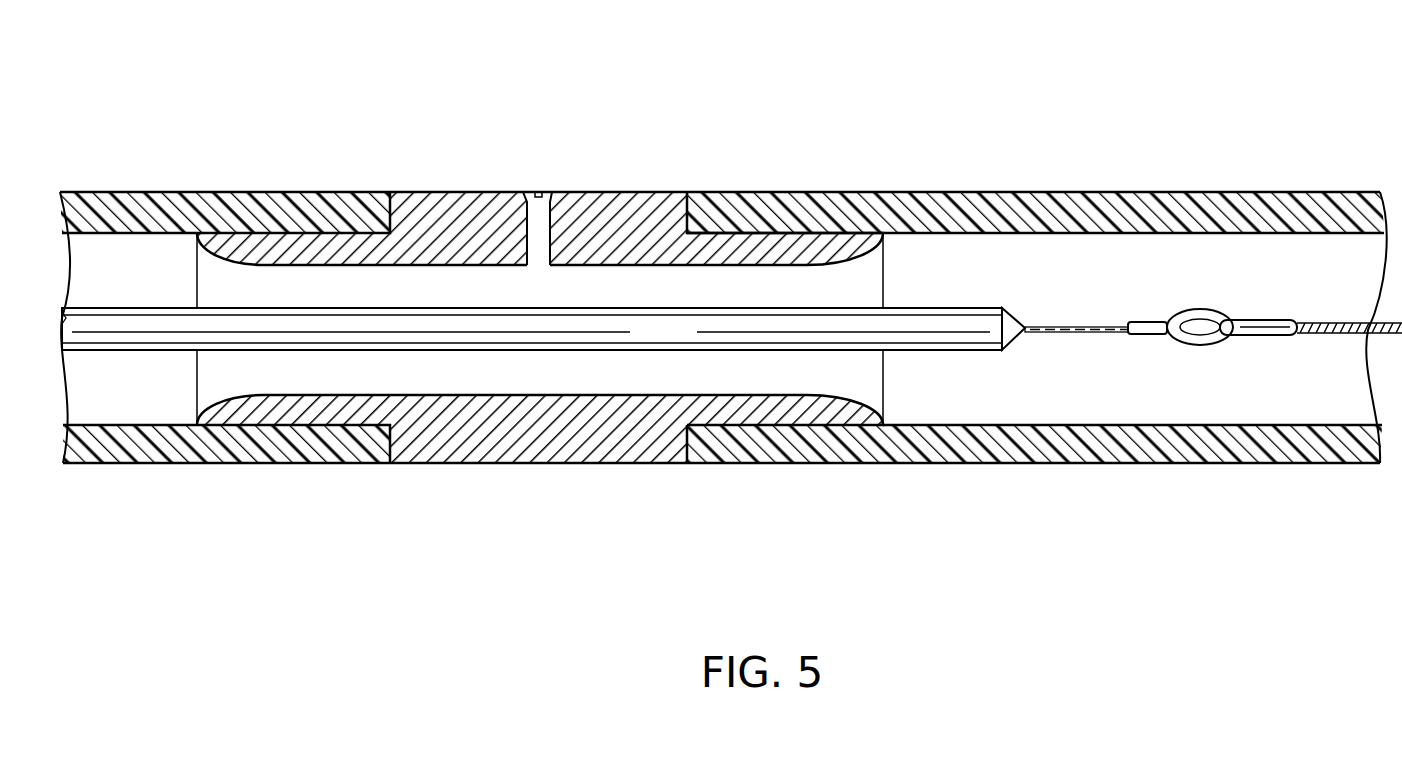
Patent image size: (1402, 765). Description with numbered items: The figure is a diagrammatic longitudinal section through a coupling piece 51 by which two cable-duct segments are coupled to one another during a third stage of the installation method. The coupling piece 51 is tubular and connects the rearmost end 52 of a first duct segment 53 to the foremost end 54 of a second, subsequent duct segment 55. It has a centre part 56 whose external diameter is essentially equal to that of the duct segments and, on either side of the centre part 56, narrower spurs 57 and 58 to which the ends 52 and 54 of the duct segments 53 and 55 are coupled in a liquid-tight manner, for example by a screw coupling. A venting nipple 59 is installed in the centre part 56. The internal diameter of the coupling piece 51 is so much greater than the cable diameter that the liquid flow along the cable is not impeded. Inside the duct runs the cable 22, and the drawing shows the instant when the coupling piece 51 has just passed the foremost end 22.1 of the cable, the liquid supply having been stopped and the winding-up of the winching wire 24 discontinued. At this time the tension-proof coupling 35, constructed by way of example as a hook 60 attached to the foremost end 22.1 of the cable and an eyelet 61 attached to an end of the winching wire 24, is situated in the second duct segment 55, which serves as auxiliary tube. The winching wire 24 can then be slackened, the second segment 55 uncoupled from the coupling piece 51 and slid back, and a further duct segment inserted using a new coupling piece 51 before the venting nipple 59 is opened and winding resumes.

The cable 22 is at (150, 350).
The foremost end of the cable 22.1 is at (905, 308).
The winching wire 24 is at (1338, 333).
The tension-proof coupling 35 is at (1123, 370).
The coupling piece 51 is at (440, 483).
The rearmost end of the first duct segment 52 is at (248, 210).
The first duct segment 53 is at (88, 213).
The foremost end of the second duct segment 54 is at (748, 427).
The second duct segment 55 is at (1193, 447).
The centre part 56 is at (560, 463).
The spur 57 is at (281, 250).
The spur 58 is at (760, 250).
The venting nipple 59 is at (533, 220).
The hook 60 is at (1168, 318).
The eyelet 61 is at (1262, 322).